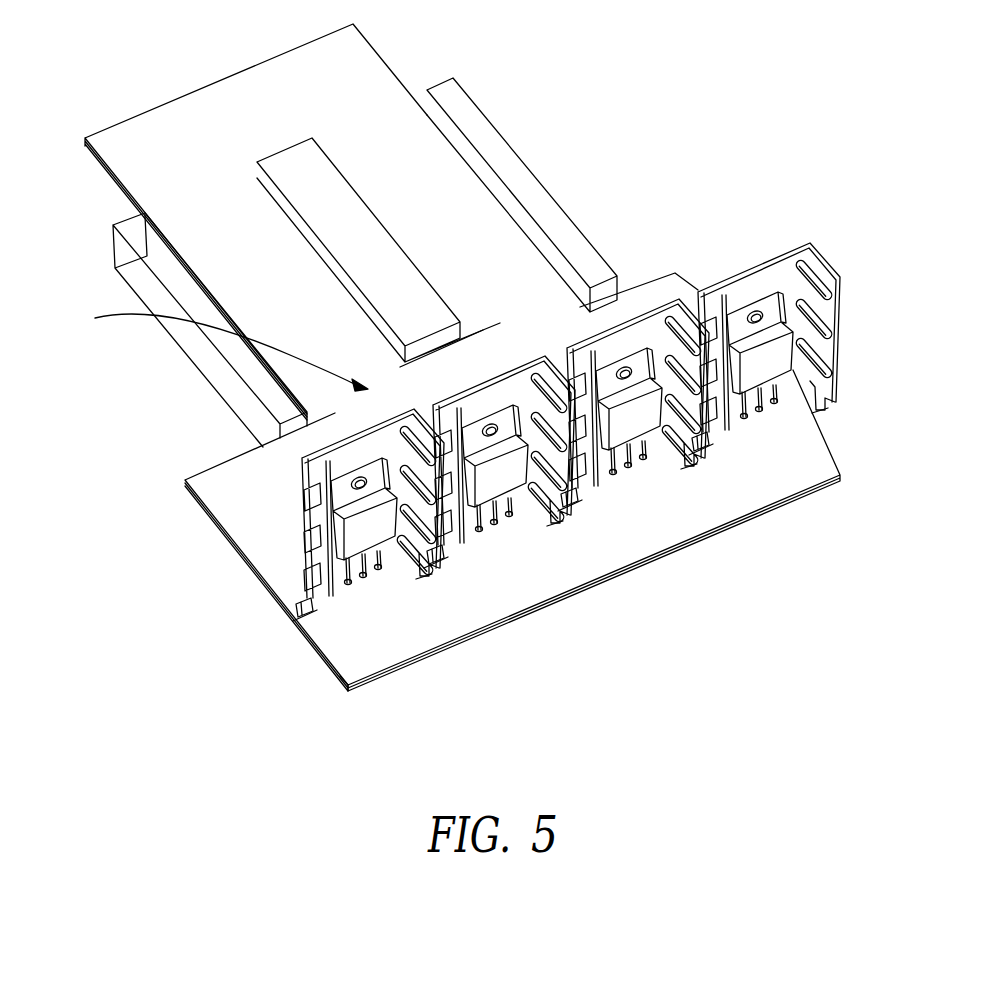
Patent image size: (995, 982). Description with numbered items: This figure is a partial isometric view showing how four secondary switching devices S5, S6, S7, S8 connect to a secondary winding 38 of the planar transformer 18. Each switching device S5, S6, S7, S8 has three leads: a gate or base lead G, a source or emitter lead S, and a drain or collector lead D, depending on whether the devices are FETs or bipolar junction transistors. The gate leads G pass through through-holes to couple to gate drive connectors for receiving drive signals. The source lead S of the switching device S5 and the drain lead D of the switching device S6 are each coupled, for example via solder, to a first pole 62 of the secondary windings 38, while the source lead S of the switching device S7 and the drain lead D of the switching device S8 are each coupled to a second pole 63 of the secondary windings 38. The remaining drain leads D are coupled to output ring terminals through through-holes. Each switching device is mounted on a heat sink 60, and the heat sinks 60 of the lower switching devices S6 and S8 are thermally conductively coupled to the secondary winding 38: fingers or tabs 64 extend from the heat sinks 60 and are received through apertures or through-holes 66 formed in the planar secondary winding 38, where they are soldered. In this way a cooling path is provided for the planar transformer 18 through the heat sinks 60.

The planar transformer 18 is at (391, 235).
The secondary winding 38 is at (215, 349).
The heat sink 60 is at (508, 397).
The first pole 62 is at (543, 530).
The second pole 63 is at (330, 720).
The tab 64 is at (551, 560).
The through-hole 66 is at (474, 594).
The secondary switching device S5 is at (760, 281).
The secondary switching device S6 is at (629, 339).
The secondary switching device S7 is at (495, 411).
The secondary switching device S8 is at (357, 474).
The gate lead G is at (524, 573).
The drain lead D is at (591, 556).
The source lead S is at (611, 552).